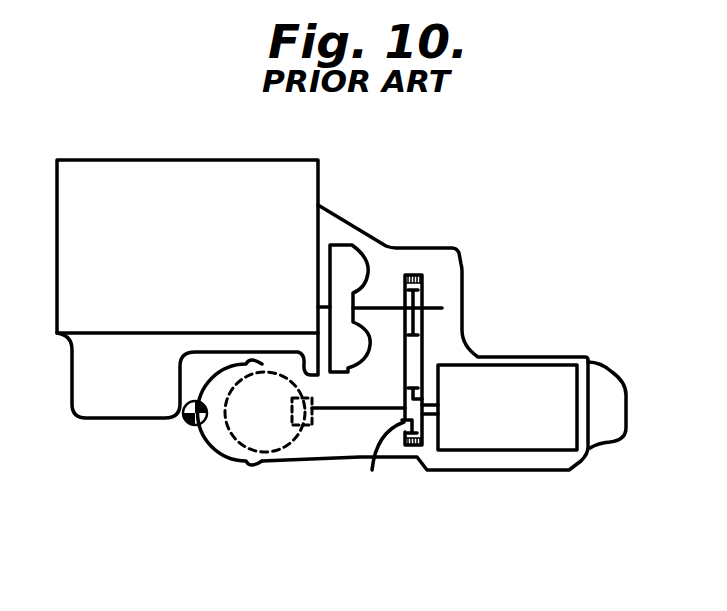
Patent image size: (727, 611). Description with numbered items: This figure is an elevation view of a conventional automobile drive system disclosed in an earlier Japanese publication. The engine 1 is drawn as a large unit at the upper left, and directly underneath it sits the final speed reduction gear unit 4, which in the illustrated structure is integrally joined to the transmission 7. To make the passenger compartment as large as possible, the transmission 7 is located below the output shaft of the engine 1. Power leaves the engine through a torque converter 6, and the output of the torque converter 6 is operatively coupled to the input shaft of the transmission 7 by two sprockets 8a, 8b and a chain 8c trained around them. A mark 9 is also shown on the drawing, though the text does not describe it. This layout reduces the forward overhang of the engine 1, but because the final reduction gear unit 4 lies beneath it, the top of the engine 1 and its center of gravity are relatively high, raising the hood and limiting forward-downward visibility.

The engine 1 is at (197, 172).
The final speed reduction gear unit 4 is at (228, 440).
The torque converter 6 is at (348, 260).
The transmission 7 is at (503, 437).
The sprocket 8a is at (425, 296).
The sprocket 8b is at (378, 440).
The chain 8c is at (425, 355).
The center of gravity mark 9 is at (185, 424).